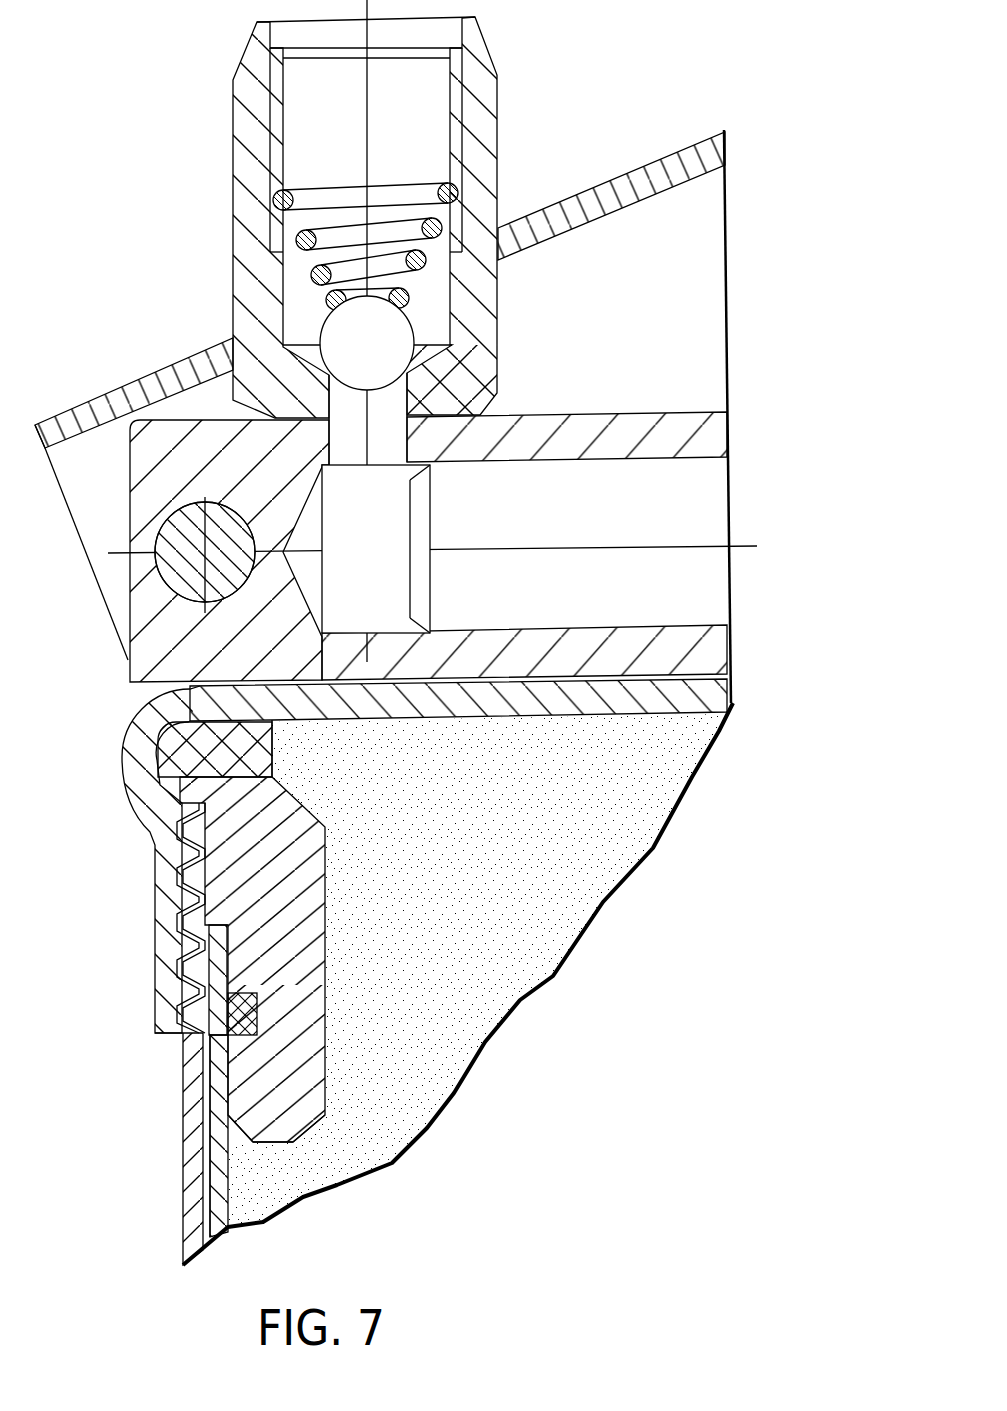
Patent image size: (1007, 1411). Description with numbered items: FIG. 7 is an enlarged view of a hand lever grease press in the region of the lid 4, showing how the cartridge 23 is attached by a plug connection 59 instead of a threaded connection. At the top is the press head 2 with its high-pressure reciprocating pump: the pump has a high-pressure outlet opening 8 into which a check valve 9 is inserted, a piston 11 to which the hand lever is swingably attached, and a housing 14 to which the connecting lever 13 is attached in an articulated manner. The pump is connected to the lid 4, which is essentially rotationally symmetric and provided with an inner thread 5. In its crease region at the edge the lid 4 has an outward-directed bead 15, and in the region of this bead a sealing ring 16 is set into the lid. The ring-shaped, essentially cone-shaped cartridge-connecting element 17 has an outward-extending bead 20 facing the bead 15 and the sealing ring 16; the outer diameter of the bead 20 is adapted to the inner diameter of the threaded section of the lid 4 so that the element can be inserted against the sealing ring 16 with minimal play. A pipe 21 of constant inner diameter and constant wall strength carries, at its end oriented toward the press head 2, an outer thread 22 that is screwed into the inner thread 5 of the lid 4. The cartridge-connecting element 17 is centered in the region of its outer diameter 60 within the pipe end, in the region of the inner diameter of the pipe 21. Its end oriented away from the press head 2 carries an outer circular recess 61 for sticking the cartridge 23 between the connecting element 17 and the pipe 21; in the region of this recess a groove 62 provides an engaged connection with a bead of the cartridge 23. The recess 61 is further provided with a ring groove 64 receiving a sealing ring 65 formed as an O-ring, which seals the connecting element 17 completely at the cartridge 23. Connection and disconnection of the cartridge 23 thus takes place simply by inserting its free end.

The press head 2 is at (58, 567).
The lid 4 is at (683, 700).
The inner thread 5 is at (190, 893).
The high-pressure outlet opening 8 is at (407, 395).
The check valve 9 is at (534, 62).
The piston 11 is at (603, 477).
The connecting lever 13 is at (630, 182).
The housing 14 is at (147, 661).
The bead 15 is at (133, 748).
The sealing ring 16 is at (178, 757).
The cartridge-connecting element 17 is at (265, 1100).
The bead 20 is at (178, 807).
The pipe 21 is at (192, 1188).
The outer thread 22 is at (165, 1007).
The cartridge 23 is at (212, 1220).
The plug connection 59 is at (258, 975).
The outer diameter 60 is at (200, 935).
The recess 61 is at (217, 1062).
The groove 62 is at (250, 927).
The ring groove 64 is at (230, 1017).
The sealing ring 65 is at (228, 1035).